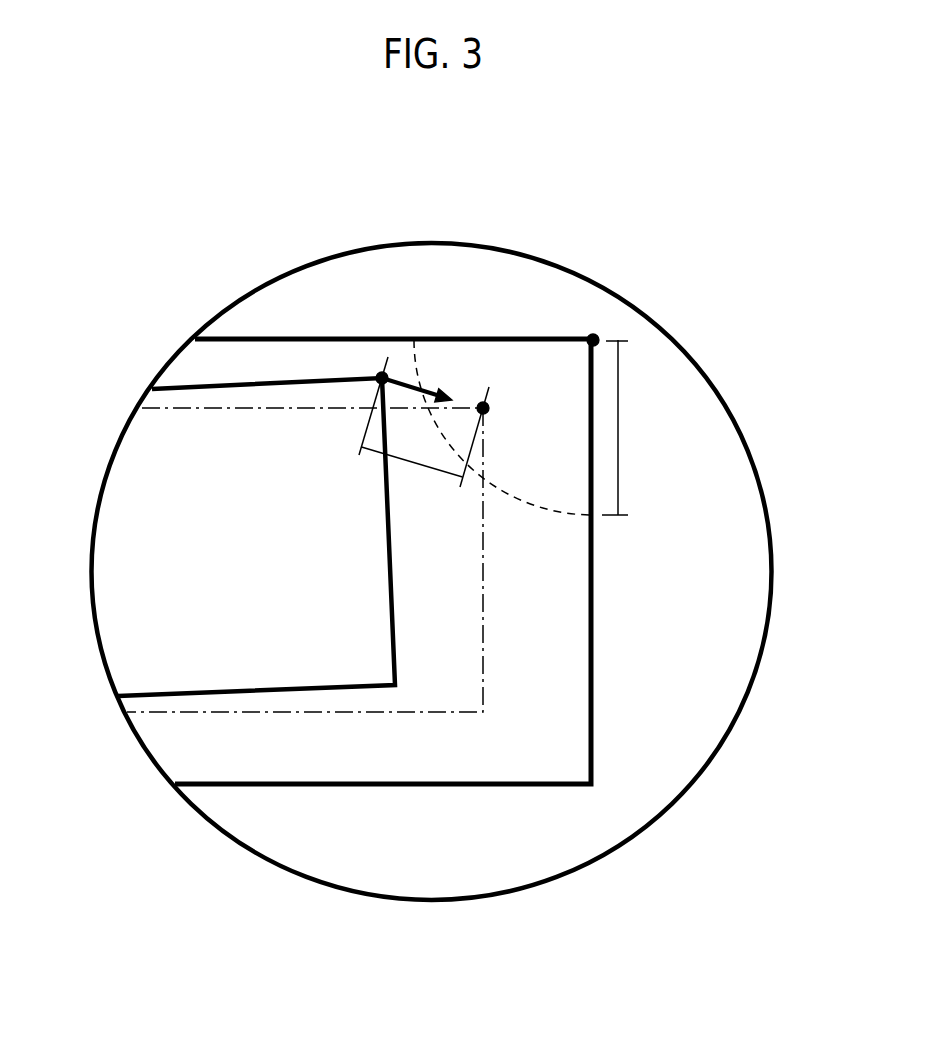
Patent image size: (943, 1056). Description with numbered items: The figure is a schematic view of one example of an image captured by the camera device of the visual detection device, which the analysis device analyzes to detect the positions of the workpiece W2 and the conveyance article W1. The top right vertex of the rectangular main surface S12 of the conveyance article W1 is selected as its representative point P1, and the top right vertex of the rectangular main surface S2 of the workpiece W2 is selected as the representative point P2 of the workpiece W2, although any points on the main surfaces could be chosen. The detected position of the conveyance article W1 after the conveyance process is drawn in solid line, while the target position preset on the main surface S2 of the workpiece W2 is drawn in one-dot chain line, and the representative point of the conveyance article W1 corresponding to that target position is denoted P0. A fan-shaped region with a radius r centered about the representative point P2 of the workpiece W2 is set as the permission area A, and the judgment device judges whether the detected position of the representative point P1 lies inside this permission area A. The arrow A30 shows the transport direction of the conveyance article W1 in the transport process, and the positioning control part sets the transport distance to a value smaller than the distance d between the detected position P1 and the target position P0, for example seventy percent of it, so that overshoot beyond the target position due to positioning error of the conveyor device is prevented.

The conveyance article W1 is at (232, 693).
The workpiece W2 is at (320, 787).
The main surface of the workpiece S2 is at (548, 685).
The main surface of the conveyance article S12 is at (347, 608).
The arrow A30 is at (428, 388).
The permission area A is at (545, 475).
The representative point corresponding to the target position P0 is at (483, 408).
The representative point of the conveyance article P1 is at (382, 378).
The representative point of the workpiece P2 is at (593, 340).
The radius r is at (620, 427).
The distance d is at (424, 429).